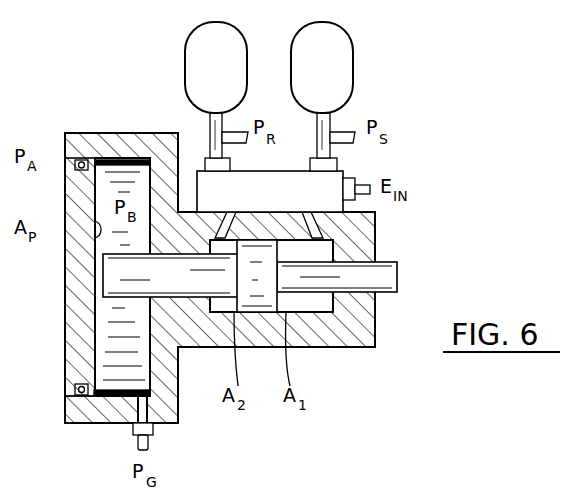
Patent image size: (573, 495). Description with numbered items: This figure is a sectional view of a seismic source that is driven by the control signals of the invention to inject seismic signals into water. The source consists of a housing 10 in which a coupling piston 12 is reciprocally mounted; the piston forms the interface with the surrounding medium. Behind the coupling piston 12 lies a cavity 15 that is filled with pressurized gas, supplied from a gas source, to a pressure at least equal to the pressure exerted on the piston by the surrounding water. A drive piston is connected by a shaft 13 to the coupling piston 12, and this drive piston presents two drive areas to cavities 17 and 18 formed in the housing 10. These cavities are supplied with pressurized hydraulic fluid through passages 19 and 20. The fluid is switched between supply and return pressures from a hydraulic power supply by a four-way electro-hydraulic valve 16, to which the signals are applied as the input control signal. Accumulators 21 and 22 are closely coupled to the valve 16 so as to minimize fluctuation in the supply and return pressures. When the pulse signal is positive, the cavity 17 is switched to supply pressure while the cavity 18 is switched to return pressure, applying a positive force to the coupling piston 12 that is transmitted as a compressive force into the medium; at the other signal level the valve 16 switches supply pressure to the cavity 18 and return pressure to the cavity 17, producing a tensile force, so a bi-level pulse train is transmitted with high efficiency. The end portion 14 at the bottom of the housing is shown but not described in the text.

The housing 10 is at (375, 331).
The coupling piston 12 is at (65, 274).
The shaft 13 is at (170, 275).
The end cap 14 is at (65, 408).
The cavity 15 is at (113, 397).
The four-way electro-hydraulic valve 16 is at (282, 202).
The cavity 17 is at (319, 312).
The cavity 18 is at (224, 312).
The passage 19 is at (330, 228).
The passage 20 is at (233, 226).
The accumulator 21 is at (352, 50).
The accumulator 22 is at (186, 49).